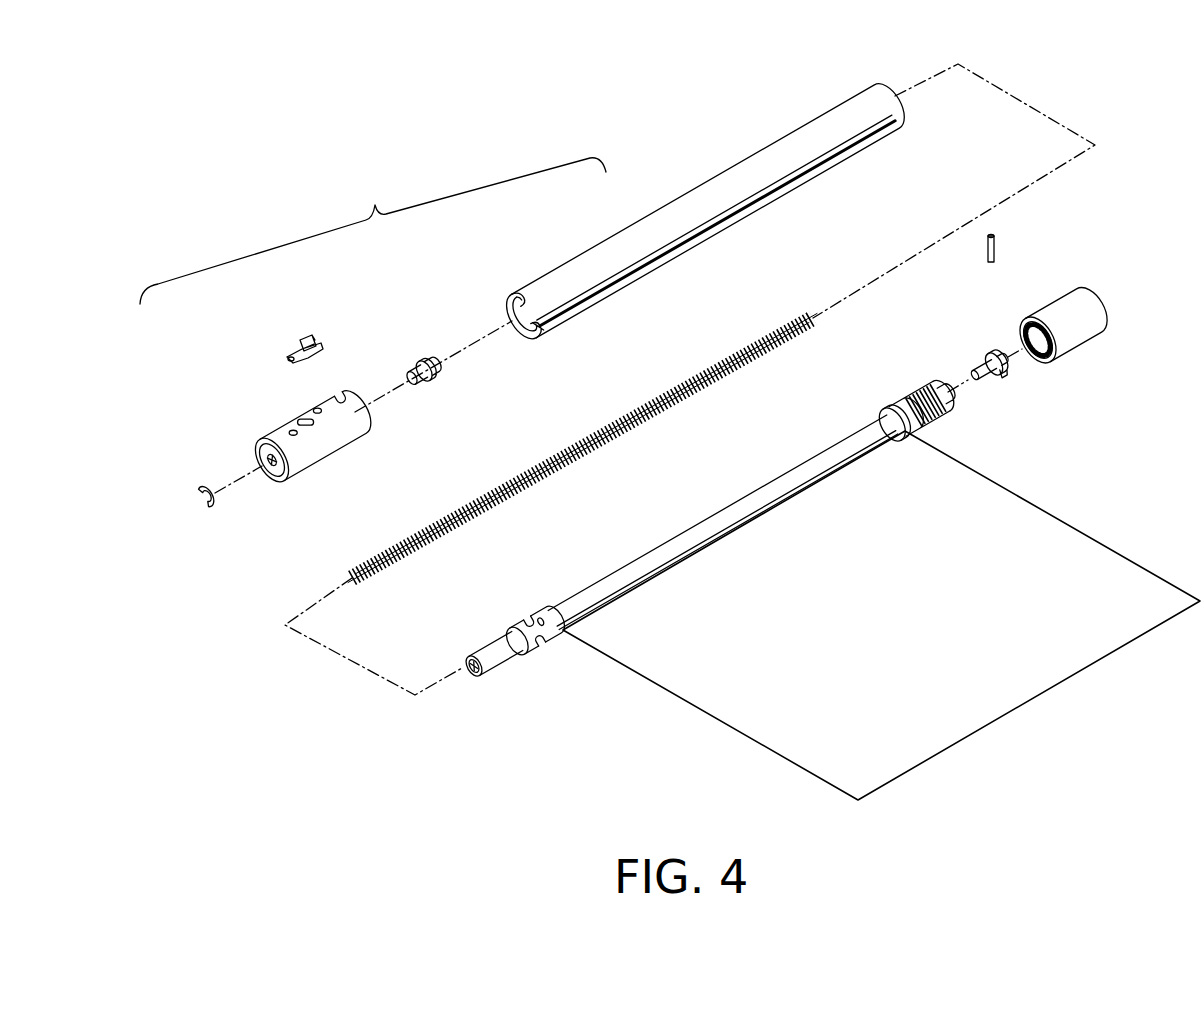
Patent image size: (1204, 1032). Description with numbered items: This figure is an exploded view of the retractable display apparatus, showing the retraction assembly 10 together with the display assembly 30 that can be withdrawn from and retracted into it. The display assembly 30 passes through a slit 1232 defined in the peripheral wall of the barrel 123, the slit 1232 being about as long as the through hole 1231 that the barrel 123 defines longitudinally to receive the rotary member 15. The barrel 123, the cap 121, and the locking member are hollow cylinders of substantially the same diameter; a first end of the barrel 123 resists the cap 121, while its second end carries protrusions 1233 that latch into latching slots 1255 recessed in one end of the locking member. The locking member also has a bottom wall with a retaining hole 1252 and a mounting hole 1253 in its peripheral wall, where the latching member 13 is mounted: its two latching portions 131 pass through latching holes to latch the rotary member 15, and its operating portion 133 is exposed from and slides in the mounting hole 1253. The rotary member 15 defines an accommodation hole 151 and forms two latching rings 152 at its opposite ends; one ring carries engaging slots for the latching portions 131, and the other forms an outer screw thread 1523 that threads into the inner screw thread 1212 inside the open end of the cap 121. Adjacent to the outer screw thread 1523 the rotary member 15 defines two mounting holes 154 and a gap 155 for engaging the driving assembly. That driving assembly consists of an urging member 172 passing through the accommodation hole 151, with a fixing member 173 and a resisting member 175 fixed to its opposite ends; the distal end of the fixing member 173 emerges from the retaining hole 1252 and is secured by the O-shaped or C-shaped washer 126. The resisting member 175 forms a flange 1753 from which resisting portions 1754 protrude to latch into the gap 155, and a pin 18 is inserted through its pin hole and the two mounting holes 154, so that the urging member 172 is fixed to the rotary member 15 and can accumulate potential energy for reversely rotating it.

The retraction assembly 10 is at (373, 231).
The latching member 13 is at (270, 314).
The latching portions 131 is at (287, 357).
The operating portion 133 is at (300, 340).
The cap 121 is at (1084, 345).
The inner screw thread 1212 is at (1037, 360).
The barrel 123 is at (682, 229).
The through hole 1231 is at (527, 338).
The slit 1232 is at (787, 180).
The protrusions 1233 is at (516, 293).
The retaining hole 1252 is at (285, 397).
The mounting hole 1253 is at (300, 413).
The latching slots 1255 is at (342, 398).
The washer 126 is at (198, 488).
The rotary member 15 is at (694, 530).
The accommodation hole 151 is at (470, 678).
The latching rings 152 is at (543, 633).
The outer screw thread 1523 is at (909, 402).
The mounting holes 154 is at (937, 387).
The gap 155 is at (948, 403).
The urging member 172 is at (573, 450).
The fixing member 173 is at (433, 383).
The resisting member 175 is at (1020, 354).
The flange 1753 is at (993, 347).
The resisting portions 1754 is at (997, 377).
The pin 18 is at (995, 240).
The display assembly 30 is at (1074, 547).